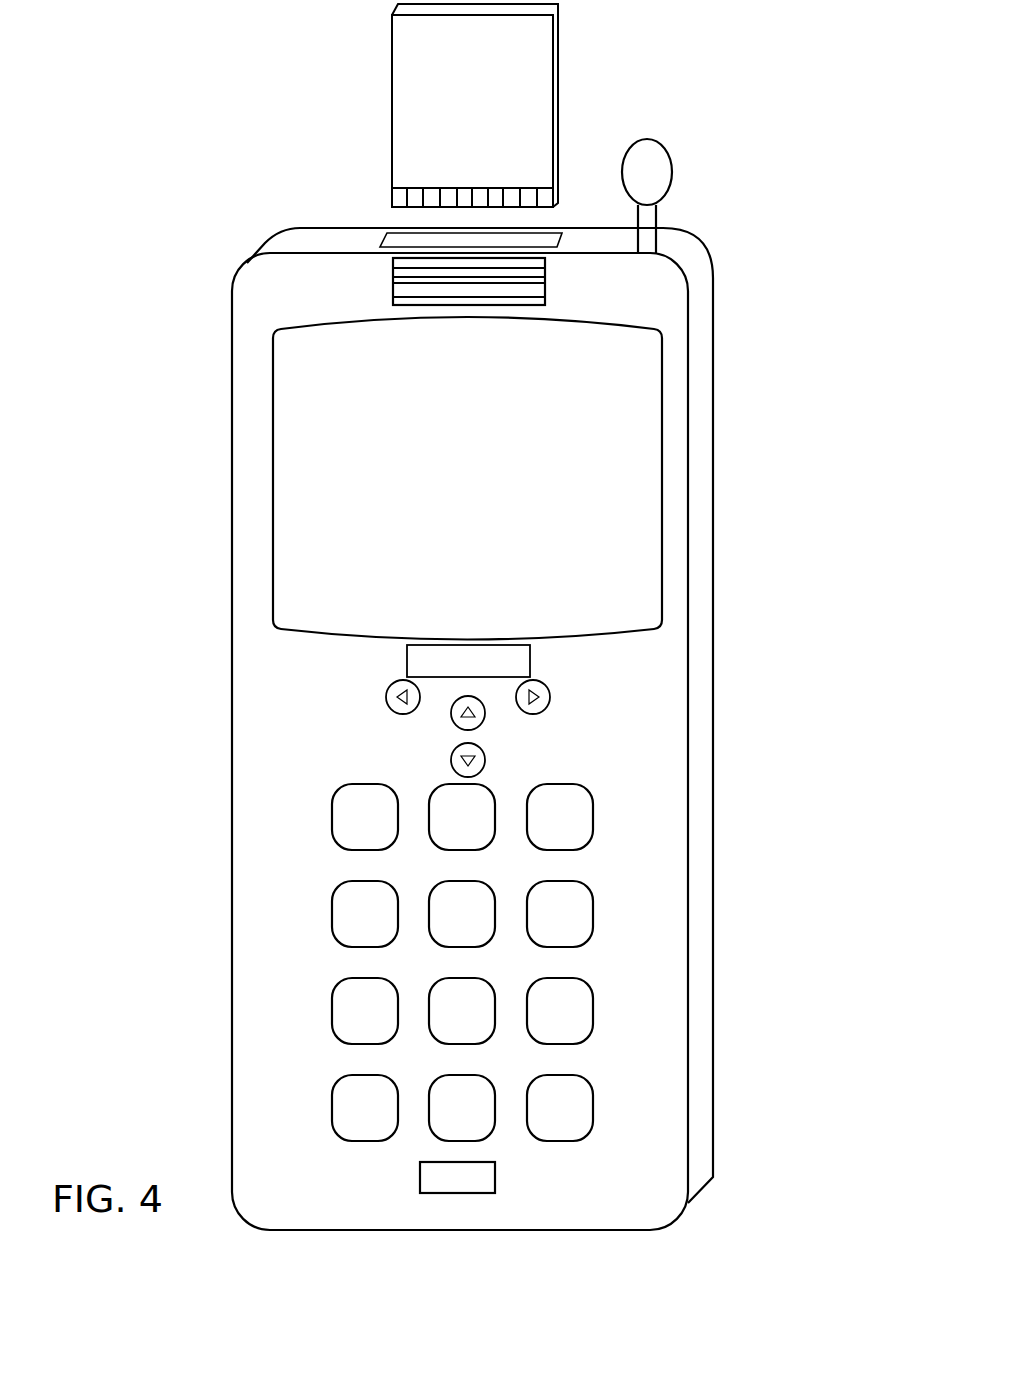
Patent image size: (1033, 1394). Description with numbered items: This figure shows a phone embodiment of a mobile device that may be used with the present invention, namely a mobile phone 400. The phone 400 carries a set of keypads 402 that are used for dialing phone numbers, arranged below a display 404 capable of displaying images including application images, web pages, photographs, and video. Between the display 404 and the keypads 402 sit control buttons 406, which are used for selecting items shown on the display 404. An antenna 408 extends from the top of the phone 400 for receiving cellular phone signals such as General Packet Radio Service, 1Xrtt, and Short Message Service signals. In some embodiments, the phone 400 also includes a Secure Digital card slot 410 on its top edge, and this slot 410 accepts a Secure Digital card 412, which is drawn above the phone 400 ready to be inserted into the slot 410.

The mobile phone 400 is at (233, 287).
The set of keypads 402 is at (613, 827).
The display 404 is at (662, 478).
The control buttons 406 is at (420, 720).
The antenna 408 is at (673, 182).
The Secure Digital card slot 410 is at (327, 228).
The SD card 412 is at (558, 70).